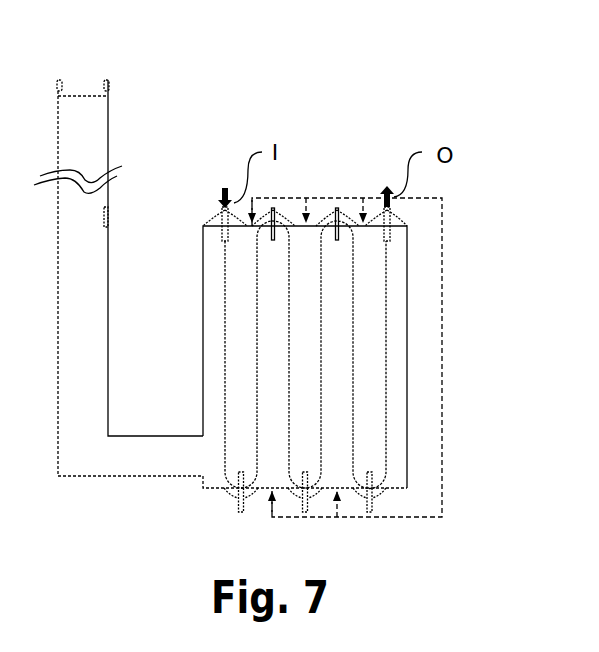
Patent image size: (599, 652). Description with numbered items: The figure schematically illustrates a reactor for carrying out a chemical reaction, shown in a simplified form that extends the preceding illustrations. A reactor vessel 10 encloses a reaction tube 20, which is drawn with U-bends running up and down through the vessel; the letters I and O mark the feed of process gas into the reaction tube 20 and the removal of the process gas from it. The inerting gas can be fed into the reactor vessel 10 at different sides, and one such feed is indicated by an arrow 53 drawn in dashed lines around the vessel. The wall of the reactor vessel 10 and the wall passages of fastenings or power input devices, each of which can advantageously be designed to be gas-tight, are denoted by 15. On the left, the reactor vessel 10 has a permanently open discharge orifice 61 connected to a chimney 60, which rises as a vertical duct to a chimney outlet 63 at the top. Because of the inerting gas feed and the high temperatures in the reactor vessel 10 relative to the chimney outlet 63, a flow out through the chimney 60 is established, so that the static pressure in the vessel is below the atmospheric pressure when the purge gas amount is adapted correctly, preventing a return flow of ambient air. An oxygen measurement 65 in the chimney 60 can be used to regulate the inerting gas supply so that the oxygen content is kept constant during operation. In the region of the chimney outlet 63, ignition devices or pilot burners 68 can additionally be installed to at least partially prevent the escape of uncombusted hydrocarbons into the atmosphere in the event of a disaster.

The reactor vessel 10 is at (407, 288).
The reaction tube 20 is at (386, 338).
The wall of the reactor vessel and wall passages 15 is at (377, 495).
The arrow indicating inerting gas feed 53 is at (444, 352).
The chimney 60 is at (115, 302).
The discharge orifice 61 is at (198, 462).
The chimney outlet 63 is at (79, 78).
The ignition devices or pilot burners 68 is at (112, 86).
The oxygen measurement 65 is at (110, 213).